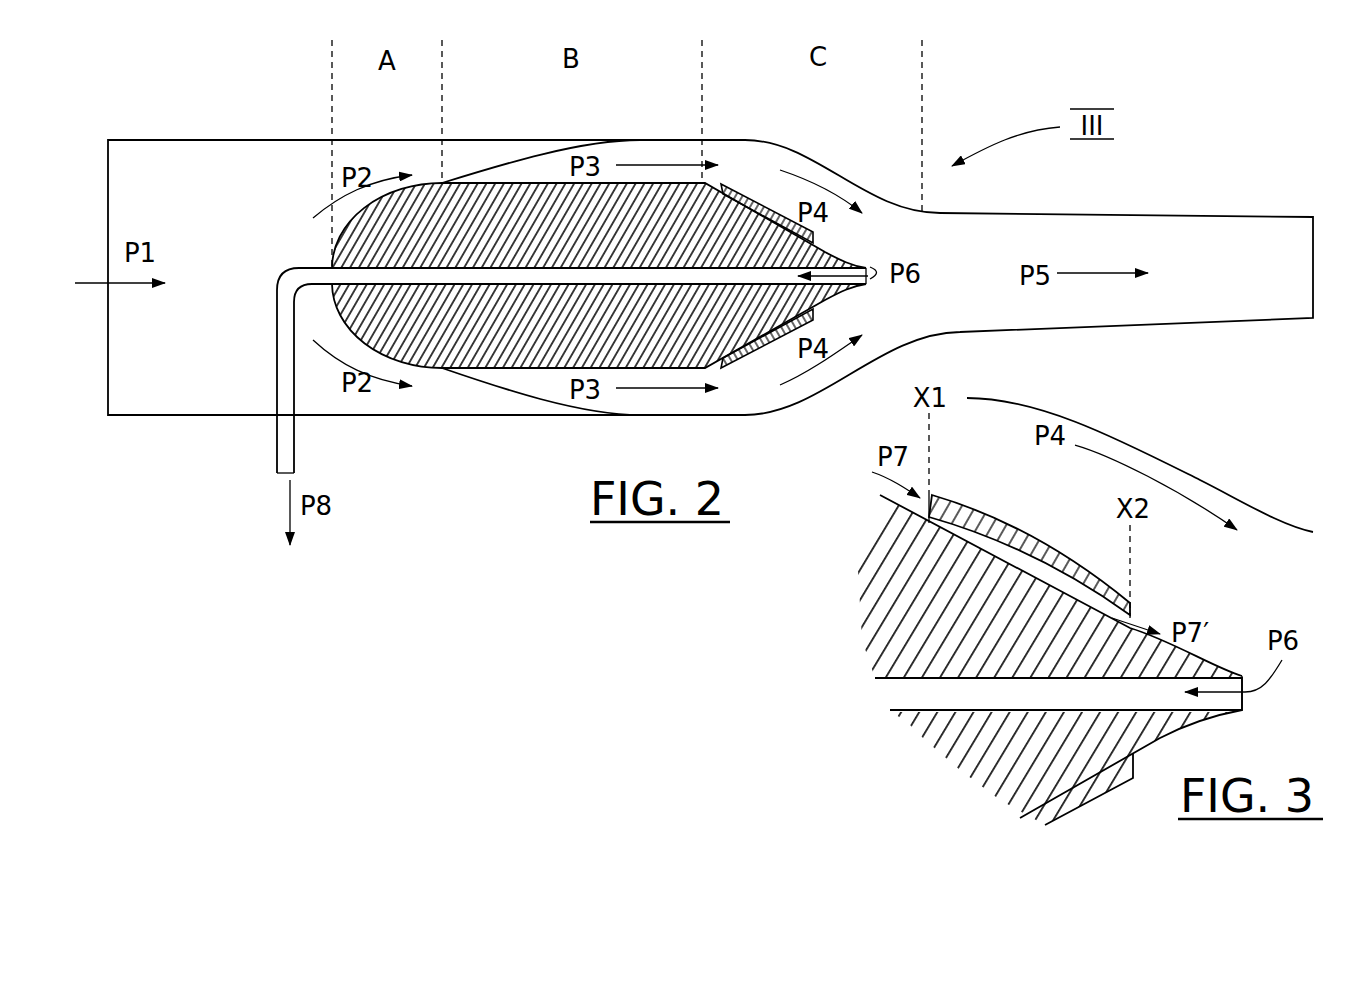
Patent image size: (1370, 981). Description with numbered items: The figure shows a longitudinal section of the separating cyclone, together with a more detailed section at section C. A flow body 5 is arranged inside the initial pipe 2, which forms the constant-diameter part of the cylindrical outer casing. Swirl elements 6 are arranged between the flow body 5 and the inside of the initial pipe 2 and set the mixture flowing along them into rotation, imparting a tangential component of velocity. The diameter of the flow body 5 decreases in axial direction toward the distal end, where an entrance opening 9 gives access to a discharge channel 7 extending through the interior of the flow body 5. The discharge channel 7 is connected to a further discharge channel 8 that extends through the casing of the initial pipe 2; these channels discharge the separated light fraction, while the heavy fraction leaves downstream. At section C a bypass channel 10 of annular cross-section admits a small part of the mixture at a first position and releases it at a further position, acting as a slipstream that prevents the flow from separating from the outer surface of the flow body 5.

In FIG. 3, the initial pipe 2 is at (1168, 452).
In FIG. 3, the flow body 5 is at (948, 765).
In FIG. 2, the swirl elements 6 is at (650, 140).
In FIG. 2, the discharge channel 7 is at (840, 284).
In FIG. 3, the discharge channel 7 is at (888, 695).
In FIG. 2, the discharge channel 8 is at (283, 454).
In FIG. 3, the entrance opening 9 is at (1250, 698).
In FIG. 2, the bypass channel 10 is at (742, 200).
In FIG. 3, the bypass channel 10 is at (1046, 580).